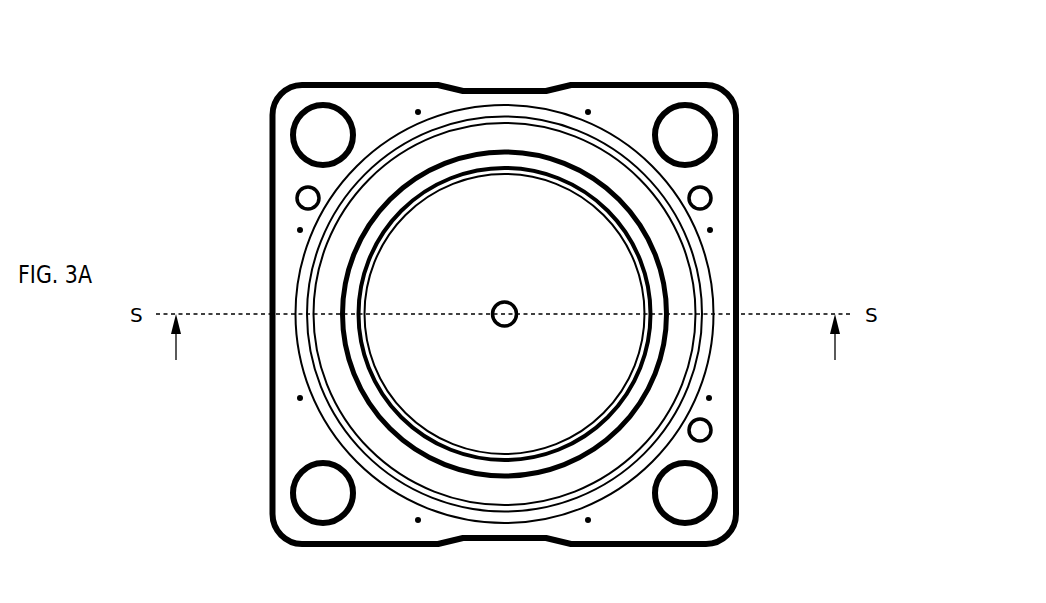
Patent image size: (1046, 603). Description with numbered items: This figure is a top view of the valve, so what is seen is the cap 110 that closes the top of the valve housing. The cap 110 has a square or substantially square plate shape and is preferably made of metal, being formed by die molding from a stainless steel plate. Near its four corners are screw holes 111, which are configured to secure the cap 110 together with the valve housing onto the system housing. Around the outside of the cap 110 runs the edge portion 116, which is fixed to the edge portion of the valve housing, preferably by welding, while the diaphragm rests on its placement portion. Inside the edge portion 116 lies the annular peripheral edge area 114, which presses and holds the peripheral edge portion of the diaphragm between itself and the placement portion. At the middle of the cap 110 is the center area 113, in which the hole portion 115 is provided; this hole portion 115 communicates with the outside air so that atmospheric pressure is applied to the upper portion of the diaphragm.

The cap 110 is at (672, 79).
The screw holes 111 is at (312, 134).
The center area 113 is at (440, 298).
The peripheral edge area 114 is at (677, 275).
The hole portion 115 is at (499, 302).
The edge portion 116 is at (713, 454).